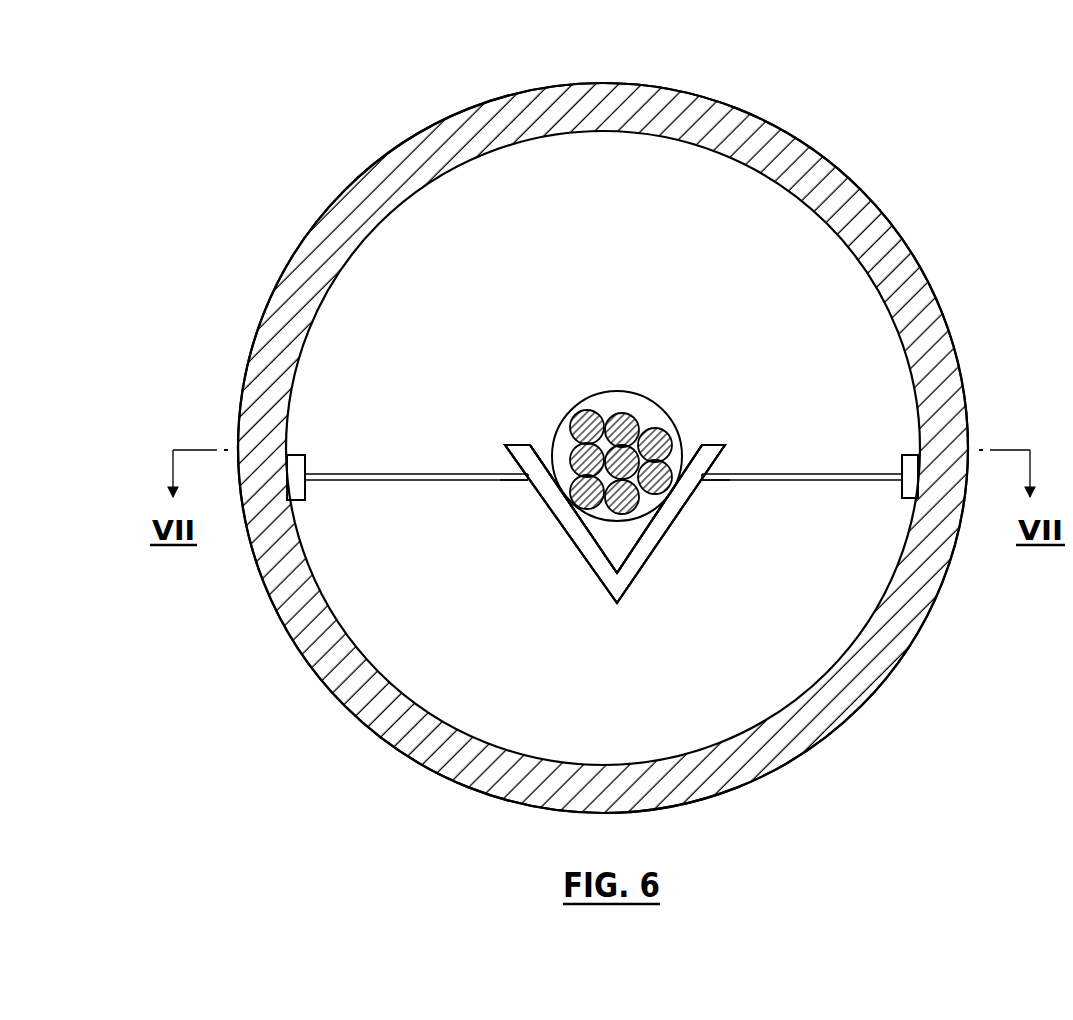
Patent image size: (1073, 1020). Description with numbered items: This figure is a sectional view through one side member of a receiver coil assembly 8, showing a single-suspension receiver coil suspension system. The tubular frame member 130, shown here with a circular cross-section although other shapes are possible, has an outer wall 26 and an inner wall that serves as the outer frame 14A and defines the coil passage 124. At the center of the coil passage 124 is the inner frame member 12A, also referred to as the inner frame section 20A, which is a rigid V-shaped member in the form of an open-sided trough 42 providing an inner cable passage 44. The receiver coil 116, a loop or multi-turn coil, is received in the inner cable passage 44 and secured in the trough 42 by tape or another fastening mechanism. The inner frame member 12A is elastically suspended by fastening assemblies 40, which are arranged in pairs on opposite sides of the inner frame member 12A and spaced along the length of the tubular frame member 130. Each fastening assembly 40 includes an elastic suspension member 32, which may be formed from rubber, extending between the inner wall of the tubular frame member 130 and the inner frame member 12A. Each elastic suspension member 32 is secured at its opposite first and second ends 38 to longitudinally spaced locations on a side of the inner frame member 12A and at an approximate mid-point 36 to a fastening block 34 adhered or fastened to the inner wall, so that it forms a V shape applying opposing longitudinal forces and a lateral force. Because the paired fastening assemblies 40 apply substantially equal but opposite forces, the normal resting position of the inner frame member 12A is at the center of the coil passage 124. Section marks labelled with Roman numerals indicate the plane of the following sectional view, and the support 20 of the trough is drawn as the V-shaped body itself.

The tubular housing 8 is at (323, 213).
The tubular frame member 130 is at (863, 187).
The housing wall 26 is at (917, 260).
The outer frame 14A is at (900, 665).
The coil passage 124 is at (623, 265).
The receiver coil 116 is at (600, 392).
The open-sided trough 42 is at (695, 437).
The V-shaped support 20 is at (528, 445).
The inner frame section 20A is at (563, 527).
The inner frame member 12A is at (670, 522).
The inner cable passage 44 is at (627, 523).
The elastic suspension member 32 is at (410, 474).
The fastening block 34 is at (300, 455).
The mid-point 36 is at (305, 492).
The first and second ends 38 is at (527, 481).
The fastening assembly 40 is at (437, 562).